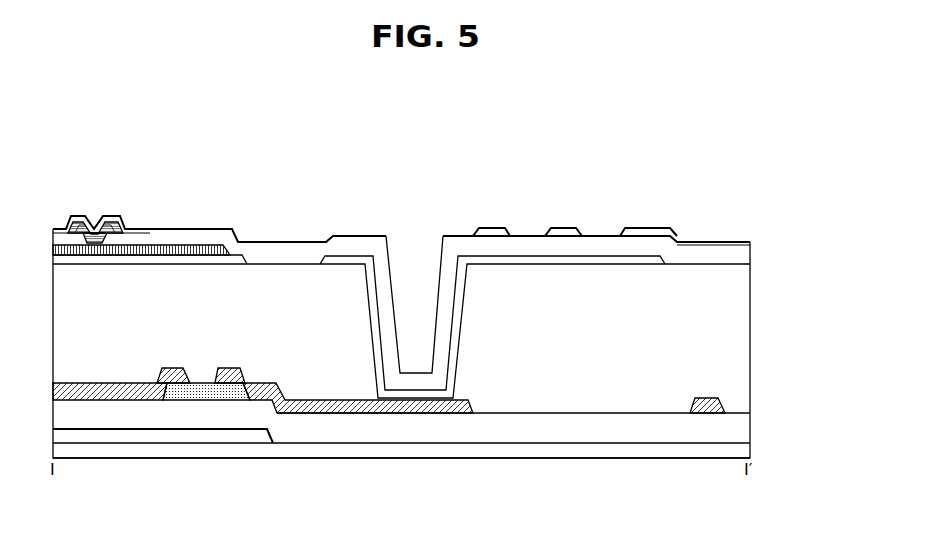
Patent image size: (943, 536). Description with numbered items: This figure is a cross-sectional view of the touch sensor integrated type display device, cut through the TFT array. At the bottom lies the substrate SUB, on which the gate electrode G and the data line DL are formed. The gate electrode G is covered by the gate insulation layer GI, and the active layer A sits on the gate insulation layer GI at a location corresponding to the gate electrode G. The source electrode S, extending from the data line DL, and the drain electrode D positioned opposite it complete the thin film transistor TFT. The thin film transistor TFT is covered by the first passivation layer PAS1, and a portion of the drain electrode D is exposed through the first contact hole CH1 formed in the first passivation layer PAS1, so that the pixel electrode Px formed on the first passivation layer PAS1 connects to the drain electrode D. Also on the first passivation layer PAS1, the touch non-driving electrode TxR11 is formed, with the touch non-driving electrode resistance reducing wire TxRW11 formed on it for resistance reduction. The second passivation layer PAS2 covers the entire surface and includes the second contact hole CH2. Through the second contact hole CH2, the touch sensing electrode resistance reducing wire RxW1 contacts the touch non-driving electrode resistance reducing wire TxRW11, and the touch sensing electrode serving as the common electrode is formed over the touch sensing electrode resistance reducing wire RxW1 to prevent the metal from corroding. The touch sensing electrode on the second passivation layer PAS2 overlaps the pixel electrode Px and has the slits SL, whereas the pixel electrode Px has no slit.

The substrate SUB is at (750, 451).
The gate insulation layer GI is at (750, 429).
The gate electrode G is at (242, 437).
The first passivation layer PAS1 is at (750, 333).
The second passivation layer PAS2 is at (750, 253).
The pixel electrode Px is at (344, 255).
The first contact hole CH1 is at (413, 247).
The second contact hole CH2 is at (91, 210).
The slit SL is at (522, 234).
The touch non-driving electrode resistance reducing wire TxRW11 is at (174, 252).
The touch non-driving electrode TxR11 is at (238, 256).
The touch sensing electrode resistance reducing wire RxW1 is at (106, 224).
The source electrode S is at (132, 400).
The active layer A is at (204, 400).
The drain electrode D is at (359, 413).
The data line DL is at (718, 401).
The thin film transistor TFT is at (148, 370).